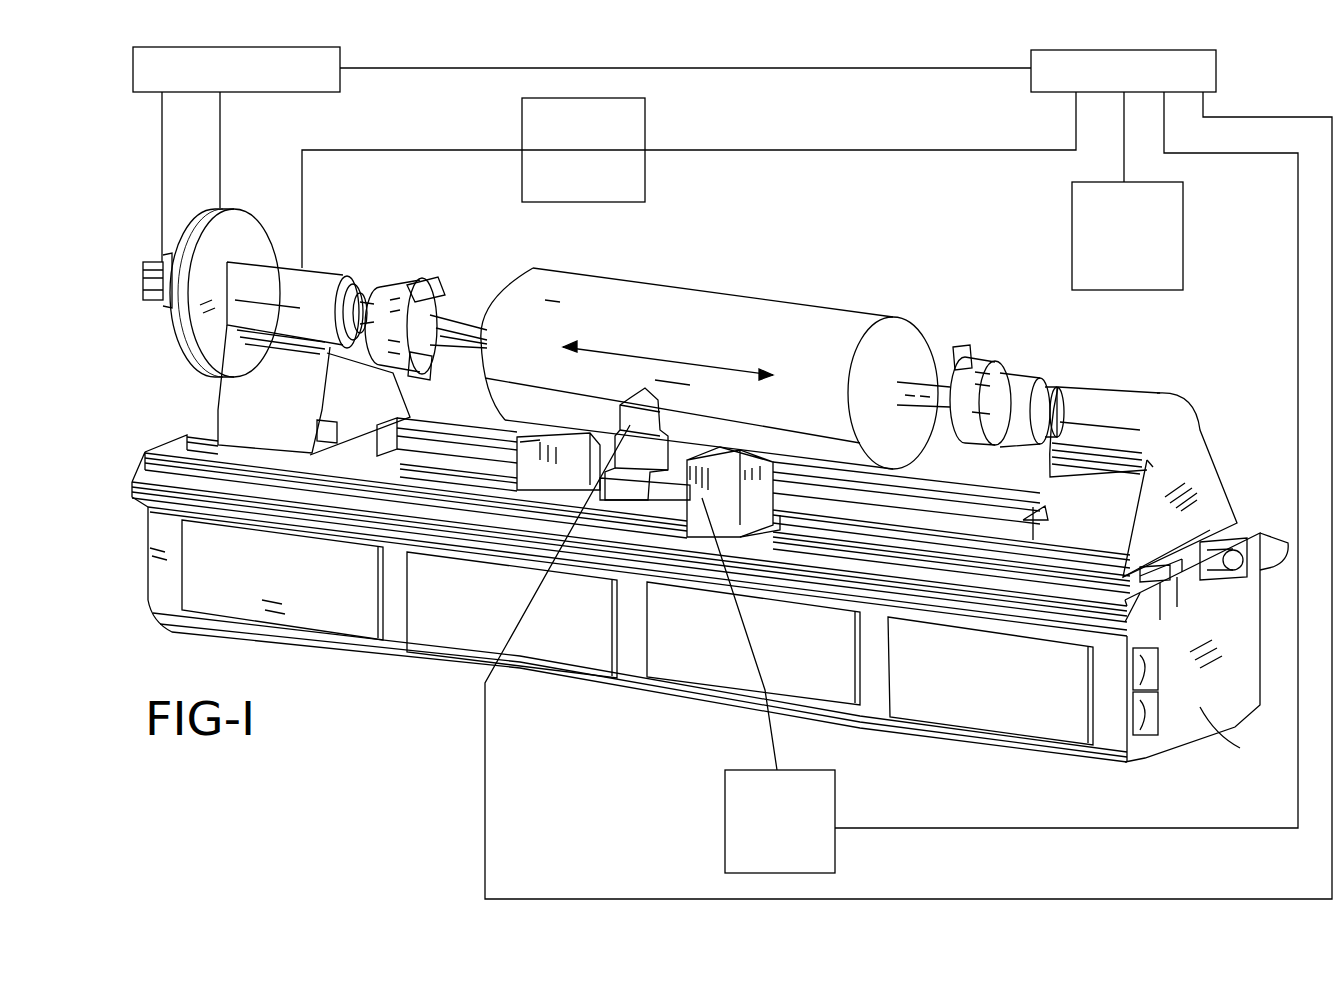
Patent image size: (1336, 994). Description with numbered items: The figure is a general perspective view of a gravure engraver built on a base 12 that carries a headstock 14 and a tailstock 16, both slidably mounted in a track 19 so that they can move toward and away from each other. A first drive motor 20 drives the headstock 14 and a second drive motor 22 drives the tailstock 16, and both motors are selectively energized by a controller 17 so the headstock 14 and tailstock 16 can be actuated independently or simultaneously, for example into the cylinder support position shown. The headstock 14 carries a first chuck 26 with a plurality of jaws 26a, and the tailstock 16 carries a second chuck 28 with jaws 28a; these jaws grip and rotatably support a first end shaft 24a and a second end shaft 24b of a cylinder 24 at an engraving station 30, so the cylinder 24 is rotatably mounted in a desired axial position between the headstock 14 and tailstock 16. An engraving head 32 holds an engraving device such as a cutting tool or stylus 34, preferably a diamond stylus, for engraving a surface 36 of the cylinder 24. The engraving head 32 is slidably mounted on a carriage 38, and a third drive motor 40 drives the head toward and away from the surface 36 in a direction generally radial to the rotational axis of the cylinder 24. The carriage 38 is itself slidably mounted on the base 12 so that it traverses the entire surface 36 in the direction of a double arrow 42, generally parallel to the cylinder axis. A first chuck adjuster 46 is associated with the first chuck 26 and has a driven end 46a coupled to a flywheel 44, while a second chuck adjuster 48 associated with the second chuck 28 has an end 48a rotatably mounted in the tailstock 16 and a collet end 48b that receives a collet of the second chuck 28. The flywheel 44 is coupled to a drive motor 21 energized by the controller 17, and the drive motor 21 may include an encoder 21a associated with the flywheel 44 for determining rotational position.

The base 12 is at (704, 599).
The headstock 14 is at (227, 400).
The tailstock 16 is at (1190, 463).
The controller 17 is at (1216, 72).
The track 19 is at (1225, 528).
The first drive motor 20 is at (522, 110).
The drive motor 21 is at (188, 95).
The encoder 21a is at (158, 305).
The second drive motor 22 is at (1183, 212).
The cylinder 24 is at (660, 285).
The first end shaft 24a is at (487, 325).
The second end shaft 24b is at (888, 330).
The first chuck 26 is at (405, 277).
The jaws 26a is at (458, 318).
The second chuck 28 is at (987, 367).
The jaws 28a is at (955, 348).
The engraving station 30 is at (743, 362).
The engraving head 32 is at (628, 398).
The cutting tool or stylus 34 is at (667, 387).
The surface 36 is at (548, 270).
The carriage 38 is at (717, 457).
The third drive motor 40 is at (835, 796).
The double arrow 42 is at (693, 367).
The flywheel 44 is at (240, 208).
The first chuck adjuster 46 is at (343, 262).
The driven end 46a is at (365, 298).
The second chuck adjuster 48 is at (1060, 378).
The end 48a is at (1040, 380).
The collet end 48b is at (1020, 367).